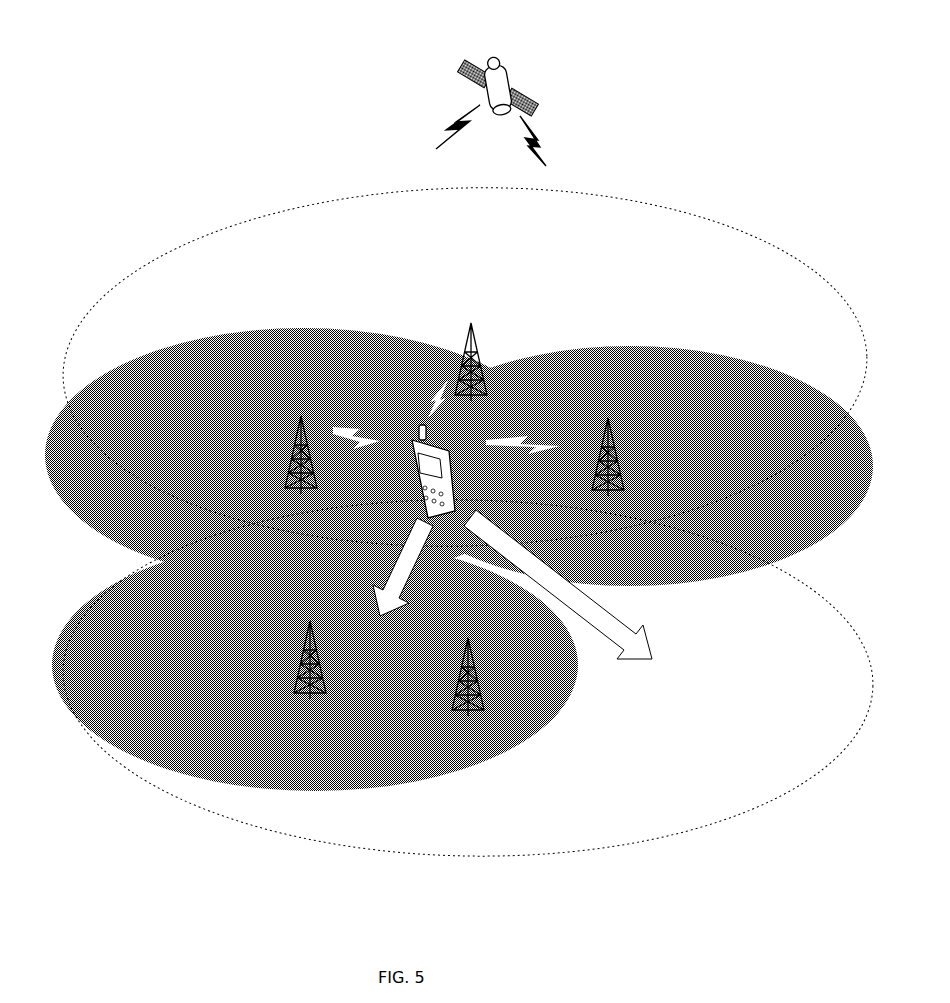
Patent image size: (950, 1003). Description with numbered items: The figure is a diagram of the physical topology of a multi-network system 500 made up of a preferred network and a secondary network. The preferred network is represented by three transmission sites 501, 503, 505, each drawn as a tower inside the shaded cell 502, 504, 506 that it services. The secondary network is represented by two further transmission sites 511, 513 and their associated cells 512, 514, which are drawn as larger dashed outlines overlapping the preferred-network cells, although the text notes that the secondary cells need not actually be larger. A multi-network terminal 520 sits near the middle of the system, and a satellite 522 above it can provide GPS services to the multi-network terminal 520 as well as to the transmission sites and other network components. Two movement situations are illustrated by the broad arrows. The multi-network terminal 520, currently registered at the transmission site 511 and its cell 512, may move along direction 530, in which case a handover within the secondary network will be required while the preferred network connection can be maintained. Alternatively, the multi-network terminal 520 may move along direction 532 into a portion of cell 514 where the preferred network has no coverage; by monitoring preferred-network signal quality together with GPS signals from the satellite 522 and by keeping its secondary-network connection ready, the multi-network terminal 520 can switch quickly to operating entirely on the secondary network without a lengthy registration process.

The multi-network system 500 is at (155, 69).
The transmission site 501 is at (283, 447).
The cell 502 is at (133, 509).
The transmission site 503 is at (596, 436).
The cell 504 is at (805, 509).
The transmission site 505 is at (292, 645).
The cell 506 is at (88, 585).
The transmission site 511 is at (457, 334).
The cell 512 is at (555, 251).
The transmission site 513 is at (456, 652).
The cell 514 is at (728, 731).
The multi-network terminal 520 is at (405, 486).
The satellite 522 is at (508, 82).
The direction 530 is at (385, 566).
The direction 532 is at (535, 572).